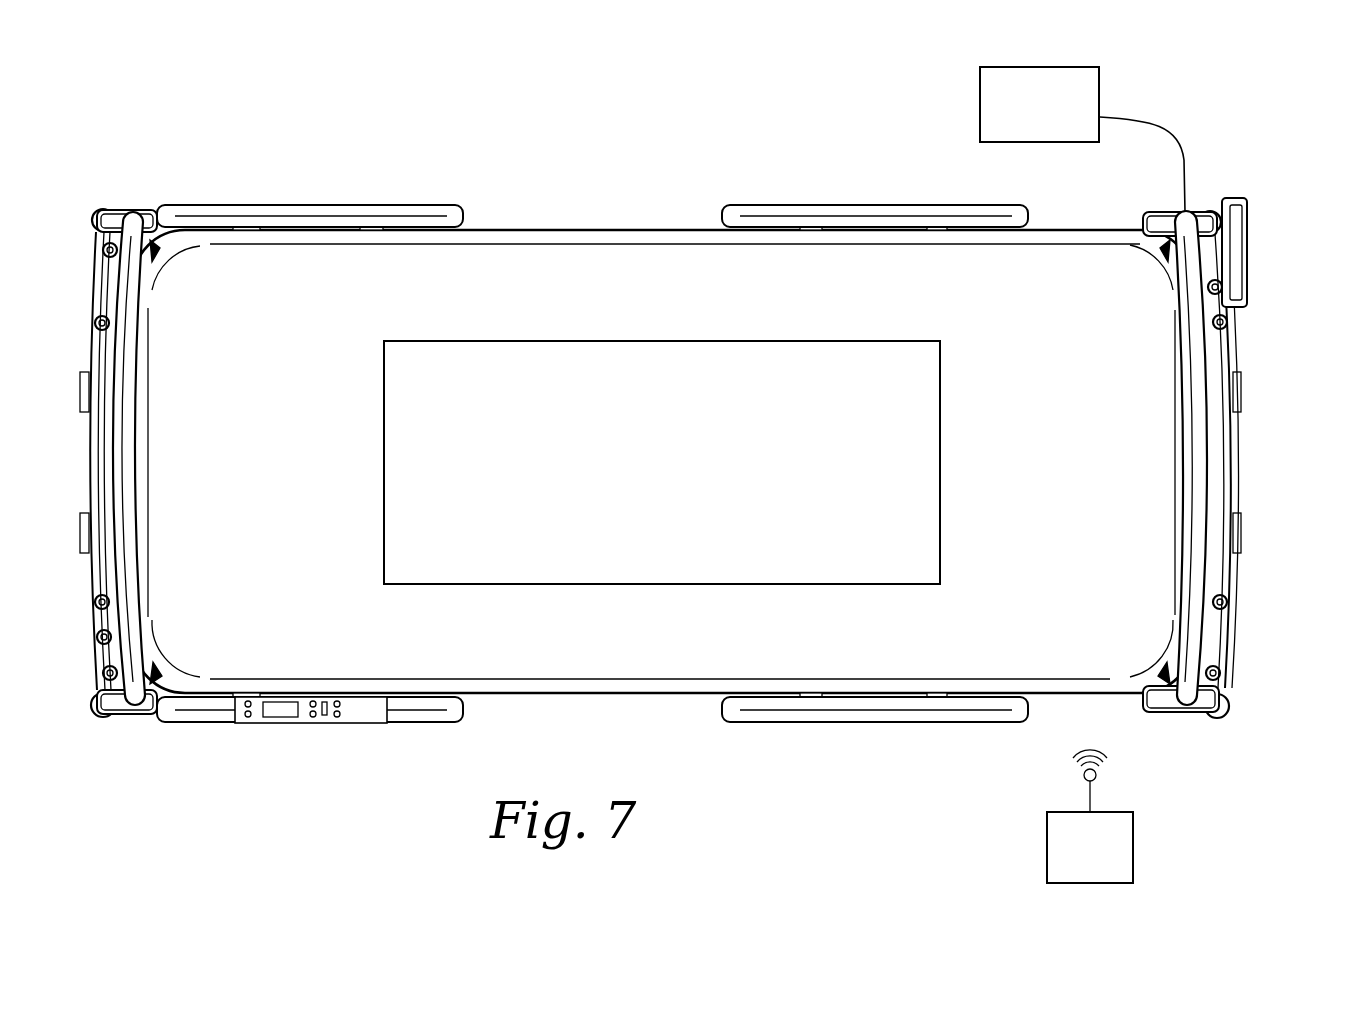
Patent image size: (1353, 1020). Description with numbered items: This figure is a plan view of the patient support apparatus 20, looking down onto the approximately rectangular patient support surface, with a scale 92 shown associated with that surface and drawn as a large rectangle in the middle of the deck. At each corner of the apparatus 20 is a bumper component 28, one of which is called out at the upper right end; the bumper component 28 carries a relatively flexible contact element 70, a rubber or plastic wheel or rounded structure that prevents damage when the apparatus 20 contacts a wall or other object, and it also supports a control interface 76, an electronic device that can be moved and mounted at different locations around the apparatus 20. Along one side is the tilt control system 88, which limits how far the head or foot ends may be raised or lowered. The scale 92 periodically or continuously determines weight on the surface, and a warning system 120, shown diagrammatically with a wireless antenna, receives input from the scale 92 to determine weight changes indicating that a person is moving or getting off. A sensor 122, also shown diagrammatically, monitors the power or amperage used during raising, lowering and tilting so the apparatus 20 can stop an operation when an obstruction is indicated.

The patient support apparatus 20 is at (405, 125).
The bumper component 28 is at (1191, 407).
The contact element 70 is at (1207, 188).
The control interface 76 is at (1248, 238).
The tilt control system 88 is at (305, 723).
The scale 92 is at (662, 462).
The warning system 120 is at (1052, 840).
The sensor 122 is at (1082, 139).